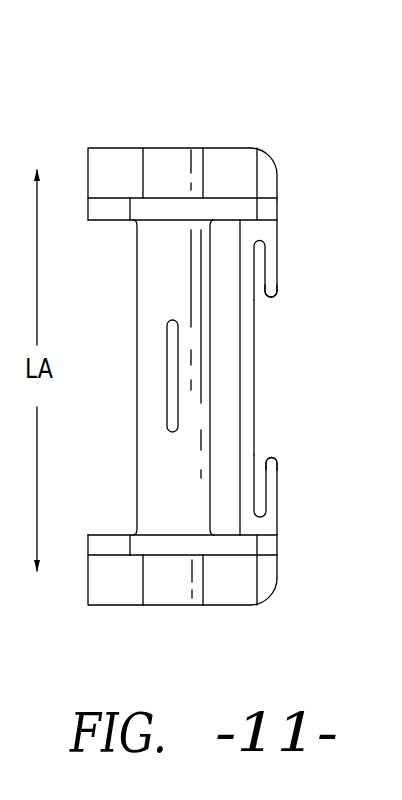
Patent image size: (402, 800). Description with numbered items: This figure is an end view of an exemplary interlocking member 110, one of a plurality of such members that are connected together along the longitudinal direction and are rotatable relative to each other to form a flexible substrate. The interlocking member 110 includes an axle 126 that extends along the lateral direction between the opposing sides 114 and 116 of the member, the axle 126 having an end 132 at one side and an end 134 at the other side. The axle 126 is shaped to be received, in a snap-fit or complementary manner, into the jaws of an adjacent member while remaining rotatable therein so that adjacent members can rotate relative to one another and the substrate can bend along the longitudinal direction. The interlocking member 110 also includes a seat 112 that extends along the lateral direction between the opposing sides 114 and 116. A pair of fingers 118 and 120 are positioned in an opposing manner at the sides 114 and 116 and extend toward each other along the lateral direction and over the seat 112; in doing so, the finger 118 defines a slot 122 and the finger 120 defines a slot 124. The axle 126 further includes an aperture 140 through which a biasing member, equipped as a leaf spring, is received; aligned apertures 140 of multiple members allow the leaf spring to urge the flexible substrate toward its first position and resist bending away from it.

The interlocking member 110 is at (225, 97).
The seat 112 is at (259, 351).
The side 114 is at (282, 146).
The side 116 is at (268, 606).
The finger 118 is at (281, 249).
The finger 120 is at (283, 505).
The slot 122 is at (262, 304).
The slot 124 is at (265, 450).
The axle 126 is at (133, 249).
The end 132 is at (165, 145).
The end 134 is at (176, 608).
The aperture 140 is at (171, 436).